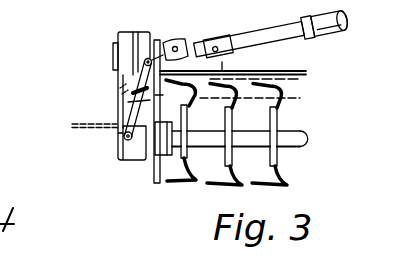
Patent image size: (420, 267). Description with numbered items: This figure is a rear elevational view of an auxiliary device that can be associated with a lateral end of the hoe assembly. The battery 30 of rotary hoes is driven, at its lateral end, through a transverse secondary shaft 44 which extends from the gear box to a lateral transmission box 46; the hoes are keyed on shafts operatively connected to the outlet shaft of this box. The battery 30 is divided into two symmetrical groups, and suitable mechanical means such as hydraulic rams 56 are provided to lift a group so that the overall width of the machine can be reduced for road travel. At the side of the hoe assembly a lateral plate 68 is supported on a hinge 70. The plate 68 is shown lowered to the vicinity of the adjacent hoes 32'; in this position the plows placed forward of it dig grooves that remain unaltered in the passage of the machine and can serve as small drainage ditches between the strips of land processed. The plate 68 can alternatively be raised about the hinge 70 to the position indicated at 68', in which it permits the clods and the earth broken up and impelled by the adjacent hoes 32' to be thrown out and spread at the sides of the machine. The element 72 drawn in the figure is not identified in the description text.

The battery of hoes 30 is at (309, 163).
The adjacent hoes 32' is at (215, 153).
The transverse secondary shaft 44 is at (200, 42).
The lateral transmission box 46 is at (113, 44).
The hydraulic ram 56 is at (327, 32).
The lateral plate 68 is at (140, 120).
The raised position of lateral plate 68' is at (62, 146).
The hinge 70 is at (113, 102).
The link 72 is at (120, 79).